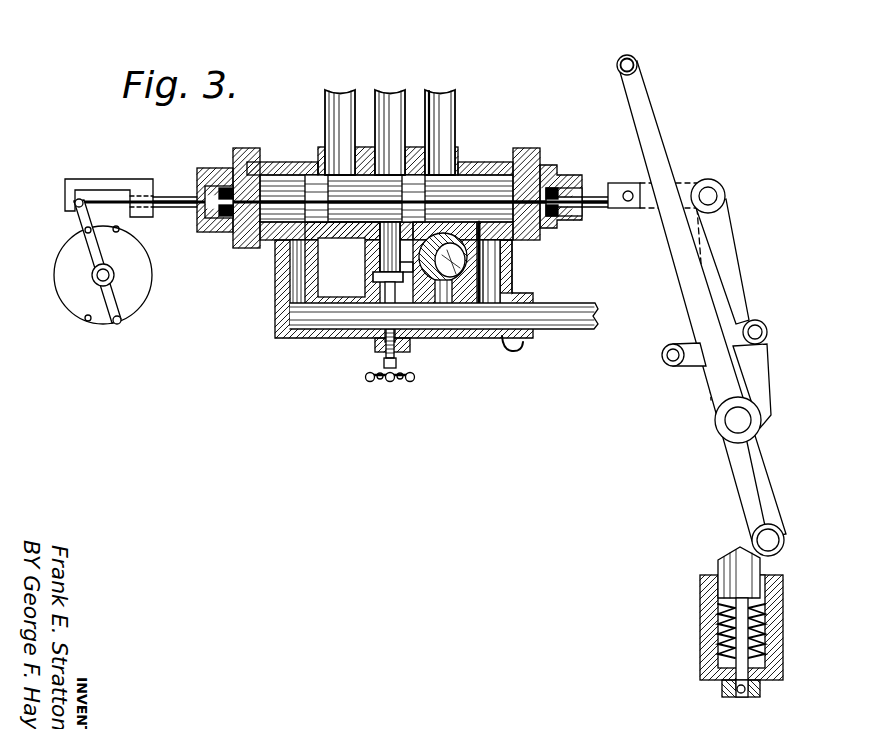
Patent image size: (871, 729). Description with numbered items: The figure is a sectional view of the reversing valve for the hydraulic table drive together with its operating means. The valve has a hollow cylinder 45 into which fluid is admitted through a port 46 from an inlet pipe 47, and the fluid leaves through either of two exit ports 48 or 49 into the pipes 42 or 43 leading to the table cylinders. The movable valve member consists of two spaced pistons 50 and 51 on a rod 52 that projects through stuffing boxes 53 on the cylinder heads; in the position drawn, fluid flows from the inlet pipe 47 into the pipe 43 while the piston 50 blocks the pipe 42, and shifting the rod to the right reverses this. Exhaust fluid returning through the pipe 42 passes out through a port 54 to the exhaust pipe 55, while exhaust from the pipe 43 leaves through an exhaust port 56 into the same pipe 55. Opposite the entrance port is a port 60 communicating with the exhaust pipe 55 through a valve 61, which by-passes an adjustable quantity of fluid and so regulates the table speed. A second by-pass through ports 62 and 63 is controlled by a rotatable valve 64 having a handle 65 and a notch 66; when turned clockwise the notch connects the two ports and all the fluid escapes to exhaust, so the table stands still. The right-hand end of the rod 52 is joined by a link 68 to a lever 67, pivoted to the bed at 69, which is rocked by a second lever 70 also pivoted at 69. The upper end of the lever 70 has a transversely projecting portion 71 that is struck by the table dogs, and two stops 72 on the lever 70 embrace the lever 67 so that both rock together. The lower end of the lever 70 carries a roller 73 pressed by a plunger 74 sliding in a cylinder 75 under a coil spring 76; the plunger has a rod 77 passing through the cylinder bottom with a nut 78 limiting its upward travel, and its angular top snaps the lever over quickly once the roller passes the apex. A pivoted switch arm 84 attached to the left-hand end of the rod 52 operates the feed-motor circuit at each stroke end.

The pipe 42 is at (442, 108).
The pipe 43 is at (322, 118).
The hollow cylinder 45 is at (512, 163).
The port 46 is at (432, 150).
The inlet pipe 47 is at (395, 95).
The exit port 48 is at (500, 167).
The exit port 49 is at (322, 167).
The piston 50 is at (420, 205).
The piston 51 is at (246, 232).
The rod 52 is at (590, 200).
The stuffing boxes 53 is at (232, 160).
The port 54 is at (500, 282).
The exhaust pipe 55 is at (583, 328).
The exhaust port 56 is at (298, 276).
The port 60 is at (385, 262).
The valve 61 is at (385, 362).
The port 62 is at (405, 262).
The port 63 is at (478, 310).
The rotatable valve 64 is at (440, 300).
The handle 65 is at (522, 348).
The notch 66 is at (460, 262).
The lever 67 is at (737, 260).
The link 68 is at (702, 184).
The pivot 69 is at (739, 434).
The lever 70 is at (650, 130).
The transversely projecting portion 71 is at (637, 65).
The stops 72 is at (768, 328).
The roller 73 is at (783, 548).
The plunger 74 is at (730, 565).
The cylinder 75 is at (772, 610).
The coil spring 76 is at (783, 622).
The rod 77 is at (745, 650).
The nut 78 is at (760, 695).
The switch arm 84 is at (80, 216).